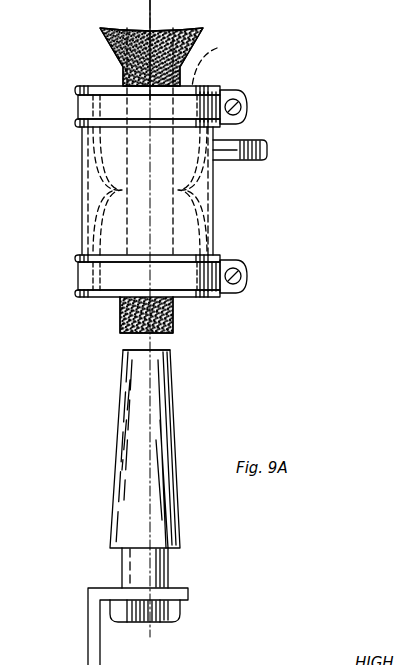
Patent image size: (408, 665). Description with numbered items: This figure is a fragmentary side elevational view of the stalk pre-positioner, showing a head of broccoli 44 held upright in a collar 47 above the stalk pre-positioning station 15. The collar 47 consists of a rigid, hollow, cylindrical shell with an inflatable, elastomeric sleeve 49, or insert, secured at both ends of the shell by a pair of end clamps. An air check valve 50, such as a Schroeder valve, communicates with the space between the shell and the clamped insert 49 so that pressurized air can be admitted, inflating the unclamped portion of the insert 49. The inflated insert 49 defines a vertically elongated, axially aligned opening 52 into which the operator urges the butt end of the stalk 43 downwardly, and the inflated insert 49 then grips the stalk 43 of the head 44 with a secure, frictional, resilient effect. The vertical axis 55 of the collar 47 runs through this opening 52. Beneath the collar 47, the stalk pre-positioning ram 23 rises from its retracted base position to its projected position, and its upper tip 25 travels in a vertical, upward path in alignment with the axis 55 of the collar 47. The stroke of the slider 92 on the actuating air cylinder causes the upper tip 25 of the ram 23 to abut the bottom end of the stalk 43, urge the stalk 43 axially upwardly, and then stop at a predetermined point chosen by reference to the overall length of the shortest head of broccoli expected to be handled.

The stalk pre-positioning station 15 is at (197, 418).
The stalk pre-positioning ram 23 is at (160, 387).
The upper tip of the ram 25 is at (130, 348).
The stalk portion 43 is at (173, 322).
The head of broccoli 44 is at (130, 50).
The collar 47 is at (267, 115).
The inflatable elastomeric sleeve 49 is at (185, 213).
The air check valve 50 is at (267, 156).
The axially aligned opening 52 is at (224, 63).
The vertical axis of the collar 55 is at (152, 15).
The slider 92 is at (190, 592).